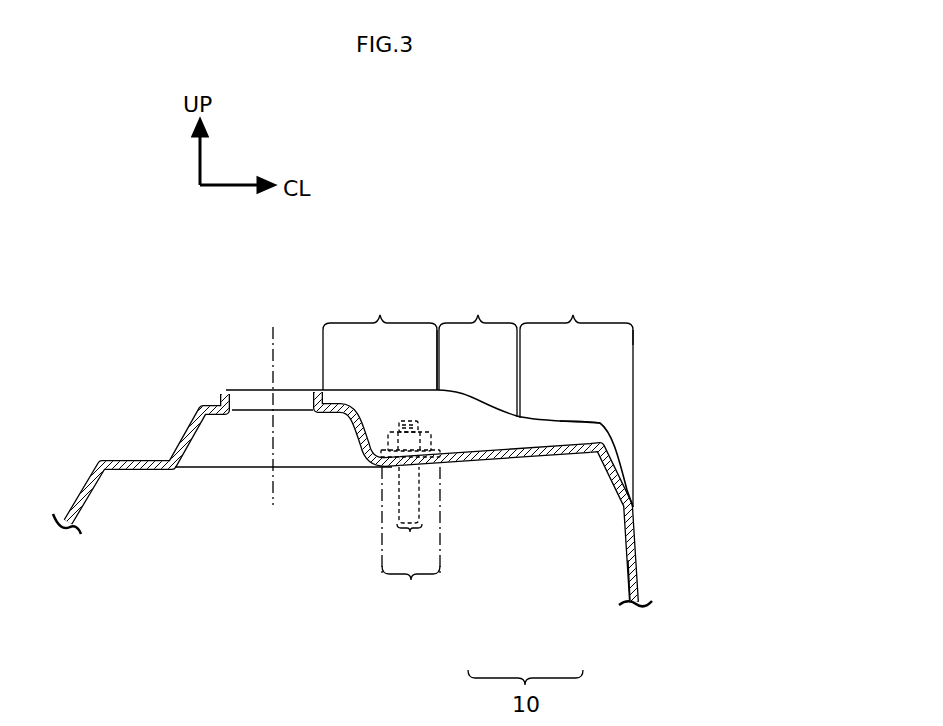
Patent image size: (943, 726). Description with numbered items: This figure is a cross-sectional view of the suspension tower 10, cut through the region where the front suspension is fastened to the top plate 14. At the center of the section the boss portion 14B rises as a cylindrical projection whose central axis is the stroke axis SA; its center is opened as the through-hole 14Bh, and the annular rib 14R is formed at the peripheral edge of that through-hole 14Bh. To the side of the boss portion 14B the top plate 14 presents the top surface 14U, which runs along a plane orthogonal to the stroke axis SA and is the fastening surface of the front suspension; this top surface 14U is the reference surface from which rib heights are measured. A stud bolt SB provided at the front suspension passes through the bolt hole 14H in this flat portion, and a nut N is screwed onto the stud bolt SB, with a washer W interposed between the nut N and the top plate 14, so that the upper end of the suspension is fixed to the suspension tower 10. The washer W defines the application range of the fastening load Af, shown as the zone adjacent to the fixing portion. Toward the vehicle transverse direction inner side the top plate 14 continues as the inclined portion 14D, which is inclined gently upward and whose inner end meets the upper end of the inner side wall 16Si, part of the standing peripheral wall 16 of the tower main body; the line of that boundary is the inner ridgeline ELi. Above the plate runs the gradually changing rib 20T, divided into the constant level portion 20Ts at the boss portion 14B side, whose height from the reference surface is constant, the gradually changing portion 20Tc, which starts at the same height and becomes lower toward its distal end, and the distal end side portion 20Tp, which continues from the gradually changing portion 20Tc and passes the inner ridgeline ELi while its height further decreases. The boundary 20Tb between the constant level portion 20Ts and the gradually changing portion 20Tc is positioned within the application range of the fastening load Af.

The suspension tower 10 is at (615, 226).
The top plate 14 is at (321, 479).
The top surface 14U is at (150, 459).
The annular rib 14R is at (223, 393).
The through-hole 14Bh is at (228, 399).
The boss portion 14B is at (357, 441).
The inclined portion 14D is at (524, 464).
The bolt hole 14H is at (410, 513).
The peripheral wall 16 is at (616, 524).
The inner side wall 16Si is at (629, 558).
The gradually changing rib 20T is at (612, 418).
The constant level portion 20Ts is at (380, 341).
The boundary 20Tb is at (437, 352).
The gradually changing portion 20Tc is at (478, 354).
The distal end side portion 20Tp is at (576, 355).
The stroke axis SA is at (275, 330).
The stud bolt SB is at (409, 421).
The nut N is at (432, 430).
The washer W is at (444, 449).
The inner ridgeline ELi is at (600, 424).
The application range of the fastening load Af is at (411, 537).